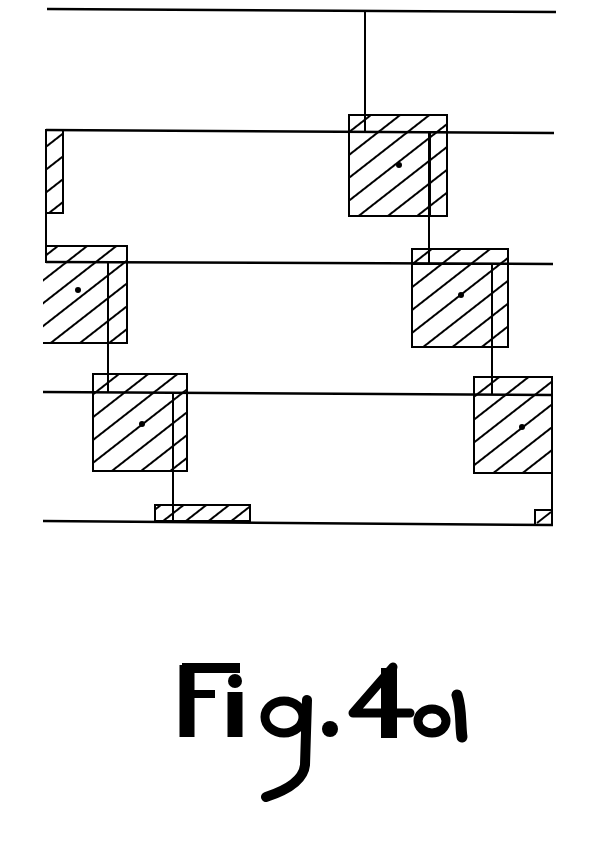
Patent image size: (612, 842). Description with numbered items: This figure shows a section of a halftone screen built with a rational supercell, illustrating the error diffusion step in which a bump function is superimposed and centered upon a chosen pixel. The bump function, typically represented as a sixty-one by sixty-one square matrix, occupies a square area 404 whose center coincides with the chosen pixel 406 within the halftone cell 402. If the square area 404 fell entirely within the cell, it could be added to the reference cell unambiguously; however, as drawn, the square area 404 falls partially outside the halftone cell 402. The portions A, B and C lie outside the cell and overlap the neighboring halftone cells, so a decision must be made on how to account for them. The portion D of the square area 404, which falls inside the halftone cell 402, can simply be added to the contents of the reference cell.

The halftone cell 402 is at (122, 129).
The square area 404 is at (447, 189).
The pixel 406 is at (349, 193).
The portion of square area falling outside the cell A is at (356, 115).
The portion of square area falling outside the cell B is at (92, 247).
The portion of square area falling outside the cell C is at (58, 177).
The portion of square area falling inside the cell D is at (346, 193).